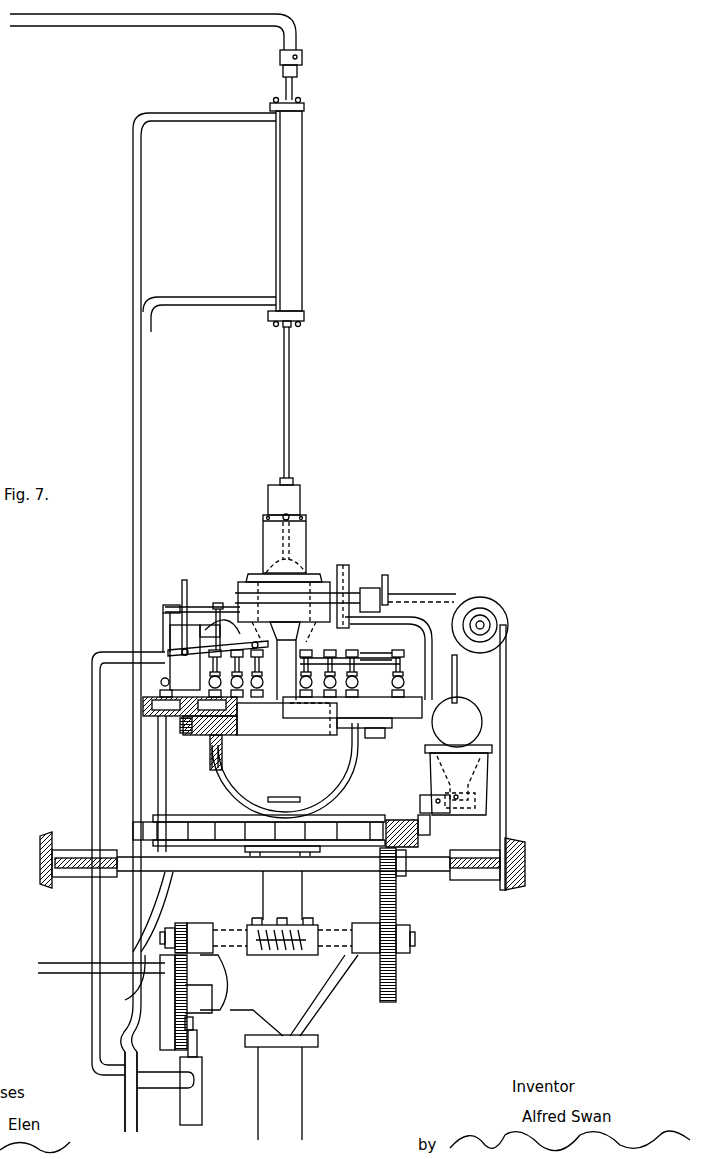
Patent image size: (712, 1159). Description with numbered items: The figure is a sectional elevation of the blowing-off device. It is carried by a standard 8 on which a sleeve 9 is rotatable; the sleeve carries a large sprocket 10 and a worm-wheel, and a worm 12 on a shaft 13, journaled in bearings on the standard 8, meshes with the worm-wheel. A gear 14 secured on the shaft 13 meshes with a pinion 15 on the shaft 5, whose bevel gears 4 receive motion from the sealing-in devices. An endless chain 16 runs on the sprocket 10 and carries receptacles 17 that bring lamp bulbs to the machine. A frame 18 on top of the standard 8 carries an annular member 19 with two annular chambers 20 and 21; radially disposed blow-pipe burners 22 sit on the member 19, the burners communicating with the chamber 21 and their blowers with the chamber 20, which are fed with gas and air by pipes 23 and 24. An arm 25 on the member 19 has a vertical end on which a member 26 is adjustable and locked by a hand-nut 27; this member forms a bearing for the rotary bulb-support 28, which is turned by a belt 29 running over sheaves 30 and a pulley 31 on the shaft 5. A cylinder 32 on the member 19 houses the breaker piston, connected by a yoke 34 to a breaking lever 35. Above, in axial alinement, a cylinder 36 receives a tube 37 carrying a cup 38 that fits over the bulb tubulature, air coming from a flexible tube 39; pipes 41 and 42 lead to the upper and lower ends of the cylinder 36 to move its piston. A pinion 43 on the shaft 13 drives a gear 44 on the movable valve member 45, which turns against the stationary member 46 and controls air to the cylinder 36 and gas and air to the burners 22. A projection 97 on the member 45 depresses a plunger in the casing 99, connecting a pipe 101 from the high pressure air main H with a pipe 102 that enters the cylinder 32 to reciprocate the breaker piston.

The bevel gears 4 is at (40, 846).
The shaft 5 is at (346, 865).
The standard 8 is at (293, 1064).
The sleeve 9 is at (300, 892).
The sprocket 10 is at (210, 828).
The worm 12 is at (315, 931).
The shaft 13 is at (220, 932).
The gear 14 is at (380, 906).
The pinion 15 is at (401, 878).
The endless chain 16 is at (414, 820).
The receptacles 17 is at (430, 773).
The frame 18 is at (353, 766).
The annular member 19 is at (402, 708).
The annular chamber 20 is at (152, 717).
The annular chamber 21 is at (209, 726).
The blow-pipe burners 22 is at (325, 651).
The gas pipe 23 is at (238, 598).
The air pipe 24 is at (218, 620).
The arm 25 is at (424, 637).
The member 26 is at (324, 620).
The hand-nut 27 is at (388, 581).
The rotary bulb-support 28 is at (321, 582).
The belt 29 is at (253, 598).
The sheaves 30 is at (508, 623).
The pulley 31 is at (502, 890).
The cylinder 32 is at (173, 668).
The yoke 34 is at (183, 604).
The breaking lever 35 is at (262, 648).
The cylinder 36 is at (276, 203).
The tube 37 is at (284, 400).
The cup 38 is at (300, 536).
The flexible tube 39 is at (87, 24).
The pipe 41 is at (206, 122).
The pipe 42 is at (221, 305).
The pinion 43 is at (180, 924).
The gear 44 is at (190, 1003).
The movable valve member 45 is at (175, 1035).
The stationary valve member 46 is at (163, 1045).
The projection 97 is at (195, 1024).
The cylindrical casing 99 is at (203, 1108).
The pipe 101 is at (168, 1089).
The pipe 102 is at (105, 1077).
The high pressure air main H is at (125, 1122).